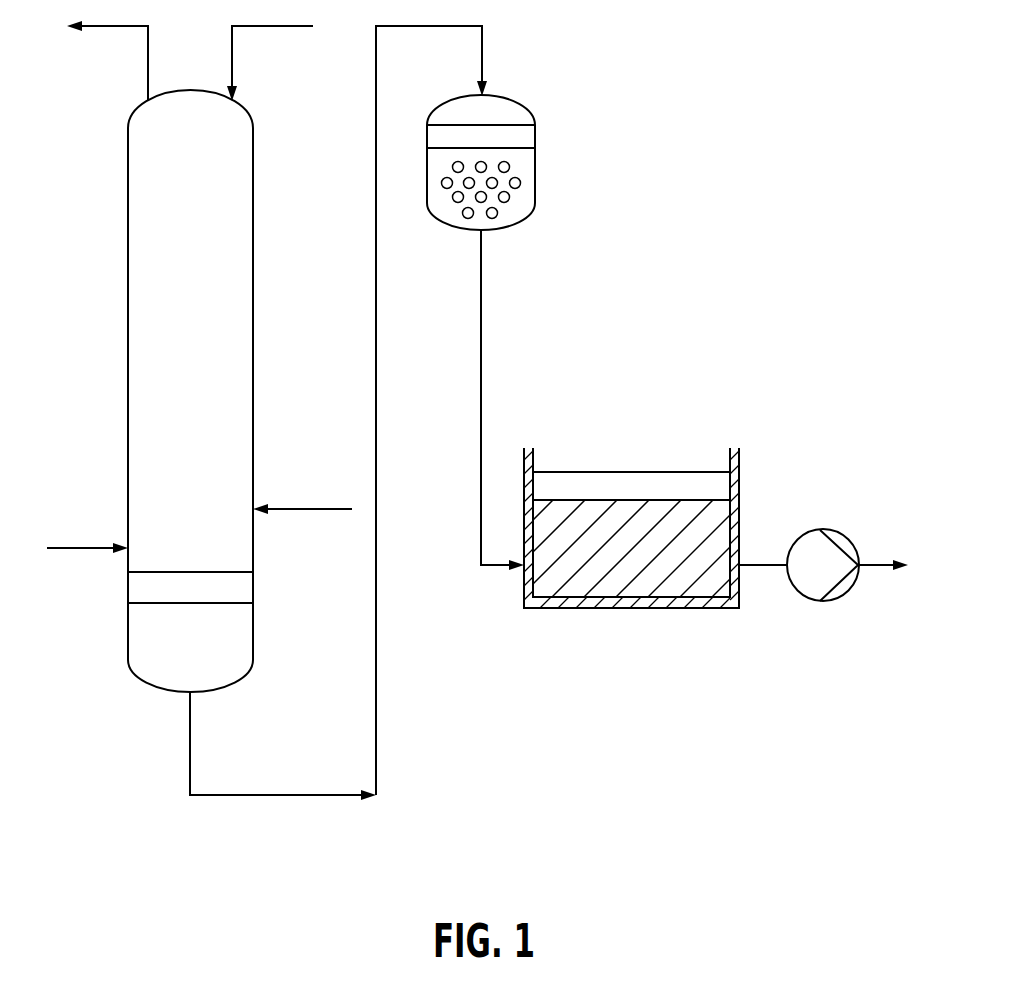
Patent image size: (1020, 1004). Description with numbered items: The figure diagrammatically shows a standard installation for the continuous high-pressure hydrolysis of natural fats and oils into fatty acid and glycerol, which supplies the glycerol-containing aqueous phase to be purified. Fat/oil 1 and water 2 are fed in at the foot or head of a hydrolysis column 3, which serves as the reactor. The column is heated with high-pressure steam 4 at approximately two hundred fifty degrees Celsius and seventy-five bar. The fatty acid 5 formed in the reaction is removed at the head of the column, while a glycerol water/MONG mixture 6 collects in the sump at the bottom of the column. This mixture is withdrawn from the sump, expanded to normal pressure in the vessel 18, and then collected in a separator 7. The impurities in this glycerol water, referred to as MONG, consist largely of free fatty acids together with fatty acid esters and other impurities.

The fat/oil 1 is at (50, 548).
The water 2 is at (293, 27).
The hydrolysis column 3 is at (152, 338).
The high-pressure steam 4 is at (308, 509).
The fatty acid 5 is at (117, 27).
The glycerol water/MONG mixture 6 is at (222, 655).
The separator 7 is at (739, 546).
The vessel 18 is at (535, 175).